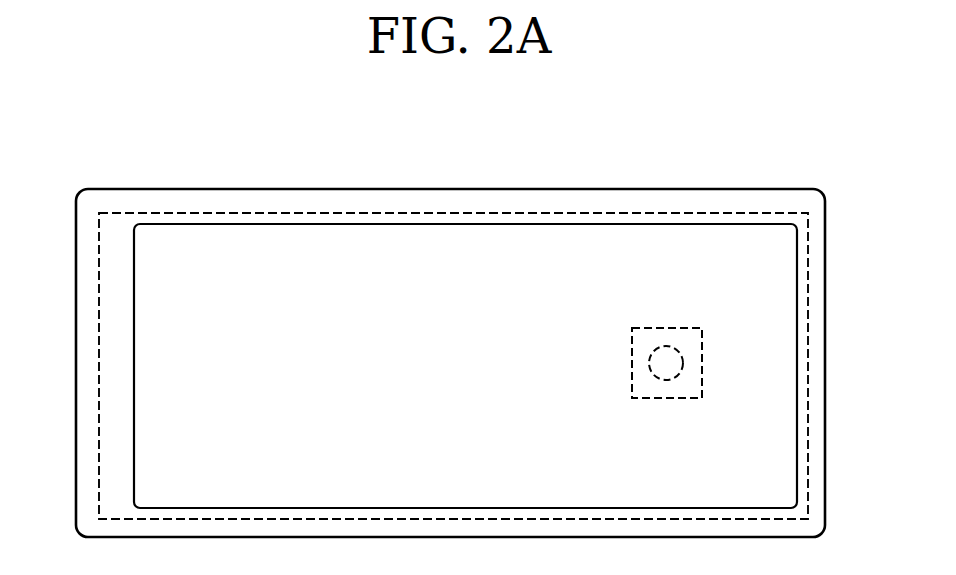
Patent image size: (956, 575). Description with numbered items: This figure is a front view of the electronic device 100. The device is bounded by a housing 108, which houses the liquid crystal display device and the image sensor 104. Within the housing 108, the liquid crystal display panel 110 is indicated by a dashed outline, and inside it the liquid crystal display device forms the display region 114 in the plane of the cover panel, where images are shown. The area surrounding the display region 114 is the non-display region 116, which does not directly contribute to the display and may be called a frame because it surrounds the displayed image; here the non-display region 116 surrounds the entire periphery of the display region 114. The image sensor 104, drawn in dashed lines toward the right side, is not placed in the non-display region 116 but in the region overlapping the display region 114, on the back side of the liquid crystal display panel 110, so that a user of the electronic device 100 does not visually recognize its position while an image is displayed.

The electronic device 100 is at (136, 143).
The image sensor 104 is at (665, 328).
The housing 108 is at (211, 189).
The liquid crystal display panel 110 is at (313, 213).
The display region 114 is at (537, 250).
The non-display region 116 is at (425, 205).